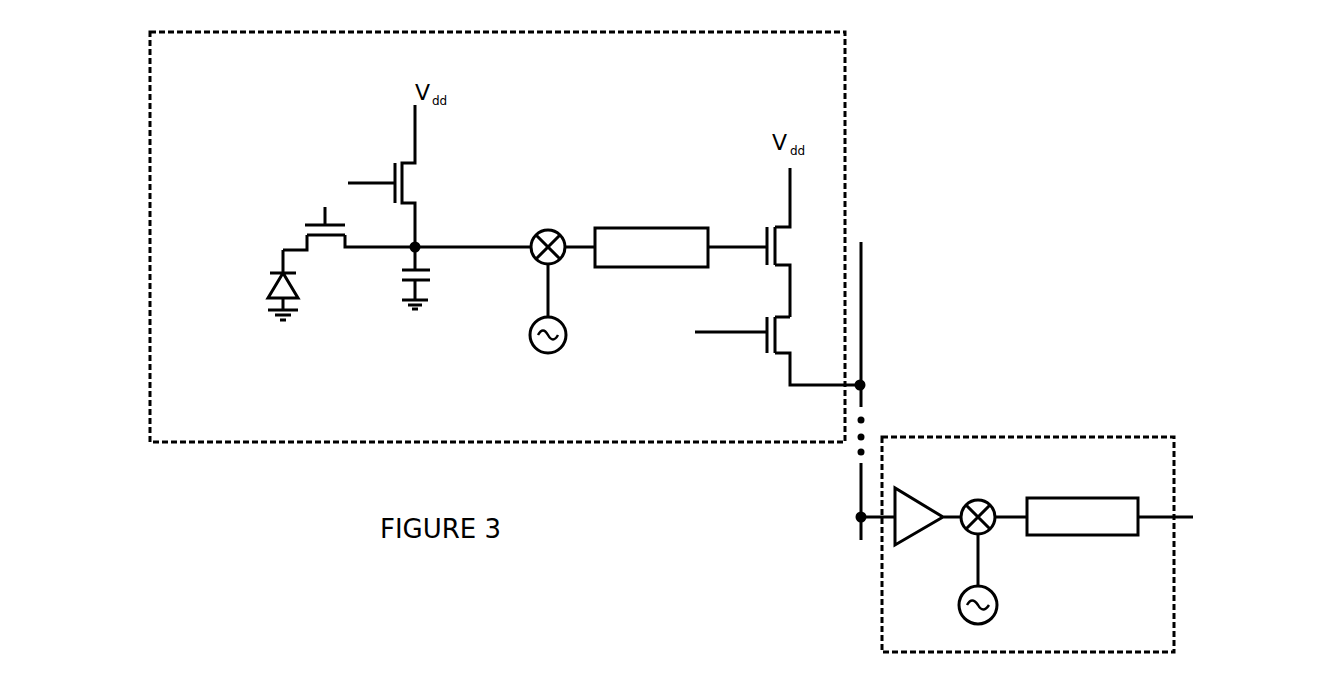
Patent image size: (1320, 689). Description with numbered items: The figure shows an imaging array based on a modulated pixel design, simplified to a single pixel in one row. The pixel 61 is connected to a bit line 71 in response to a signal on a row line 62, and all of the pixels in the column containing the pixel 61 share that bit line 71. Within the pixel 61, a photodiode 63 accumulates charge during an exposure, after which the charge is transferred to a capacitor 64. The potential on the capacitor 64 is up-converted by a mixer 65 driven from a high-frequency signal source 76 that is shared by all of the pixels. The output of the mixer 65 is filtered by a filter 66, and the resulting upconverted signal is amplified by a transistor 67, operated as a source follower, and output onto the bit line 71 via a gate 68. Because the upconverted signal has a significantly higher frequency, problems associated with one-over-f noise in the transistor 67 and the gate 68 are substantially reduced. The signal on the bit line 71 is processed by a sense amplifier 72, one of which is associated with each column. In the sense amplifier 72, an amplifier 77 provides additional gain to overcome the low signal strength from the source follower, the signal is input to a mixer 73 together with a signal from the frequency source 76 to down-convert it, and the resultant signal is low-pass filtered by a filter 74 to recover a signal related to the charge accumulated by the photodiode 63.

The pixel 61 is at (228, 445).
The row line 62 is at (730, 333).
The photodiode 63 is at (292, 277).
The capacitor 64 is at (425, 278).
The mixer 65 is at (545, 229).
The filter 66 is at (662, 227).
The transistor 67 is at (785, 262).
The gate 68 is at (785, 350).
The bit line 71 is at (862, 280).
The sense amplifier 72 is at (1174, 578).
The mixer 73 is at (978, 500).
The filter 74 is at (1072, 497).
The high-frequency signal source 76 is at (530, 340).
The amplifier 77 is at (912, 525).